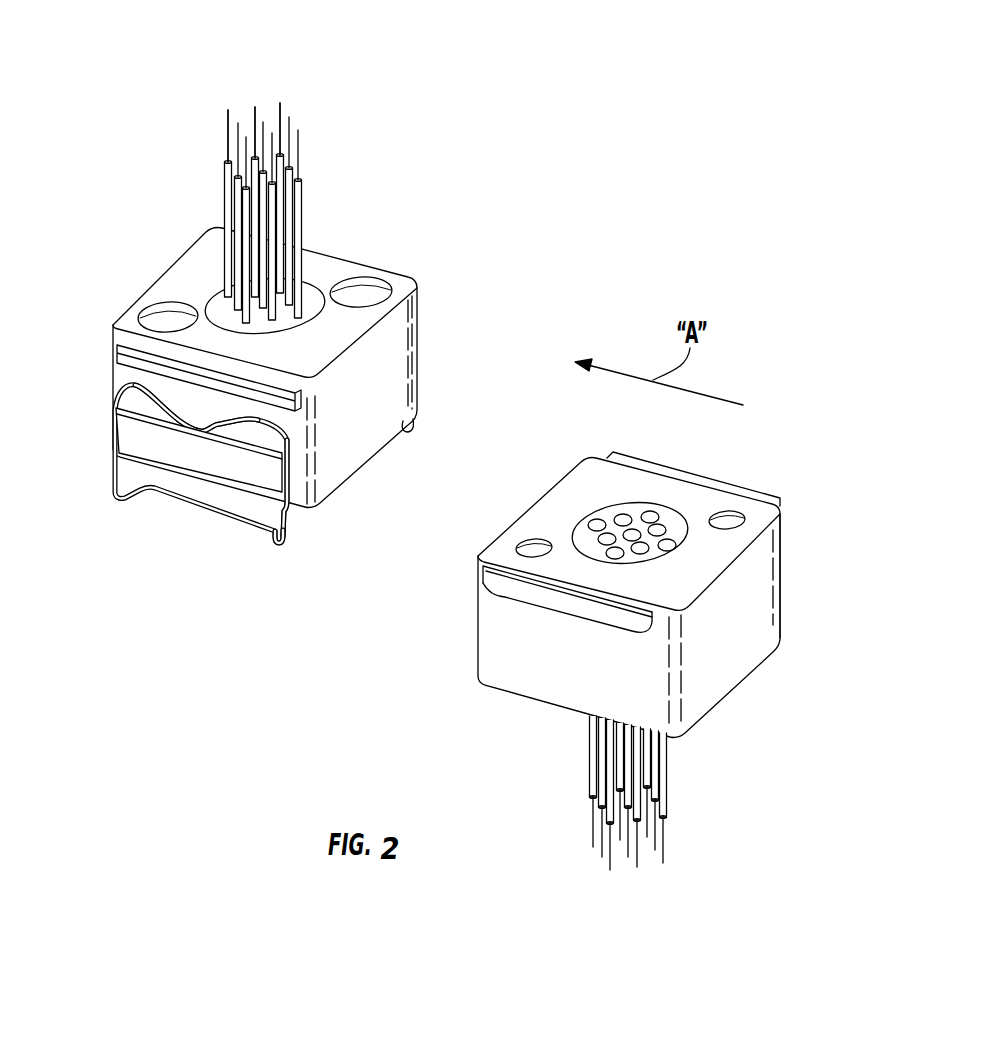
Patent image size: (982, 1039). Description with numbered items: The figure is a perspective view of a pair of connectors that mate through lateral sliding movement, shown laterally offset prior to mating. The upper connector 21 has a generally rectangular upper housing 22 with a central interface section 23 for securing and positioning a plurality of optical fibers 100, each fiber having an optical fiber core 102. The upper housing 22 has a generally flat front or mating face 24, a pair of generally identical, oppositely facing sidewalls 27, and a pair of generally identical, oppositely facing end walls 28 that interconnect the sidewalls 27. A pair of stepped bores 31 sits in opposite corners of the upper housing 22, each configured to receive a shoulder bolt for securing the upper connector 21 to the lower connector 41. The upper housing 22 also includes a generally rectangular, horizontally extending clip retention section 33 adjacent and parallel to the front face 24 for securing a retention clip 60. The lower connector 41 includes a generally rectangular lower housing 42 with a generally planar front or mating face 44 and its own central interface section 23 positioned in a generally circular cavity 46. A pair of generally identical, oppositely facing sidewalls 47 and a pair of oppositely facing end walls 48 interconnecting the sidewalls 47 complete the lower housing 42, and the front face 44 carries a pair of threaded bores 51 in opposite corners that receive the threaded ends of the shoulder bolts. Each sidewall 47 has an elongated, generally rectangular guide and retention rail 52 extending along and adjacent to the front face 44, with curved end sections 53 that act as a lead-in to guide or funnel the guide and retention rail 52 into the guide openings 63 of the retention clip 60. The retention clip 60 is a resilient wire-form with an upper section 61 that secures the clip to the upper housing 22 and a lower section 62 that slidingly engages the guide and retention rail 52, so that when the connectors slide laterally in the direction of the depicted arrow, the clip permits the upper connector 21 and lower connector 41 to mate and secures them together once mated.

The upper connector 21 is at (140, 186).
The upper housing 22 is at (322, 250).
The central interface section 23 is at (283, 323).
The front face 24 is at (370, 460).
The sidewalls 27 is at (413, 281).
The end walls 28 is at (146, 297).
The stepped bores 31 is at (357, 288).
The clip retention section 33 is at (127, 432).
The lower connector 41 is at (852, 494).
The lower housing 42 is at (777, 533).
The front face 44 is at (579, 485).
The circular cavity 46 is at (663, 553).
The sidewalls 47 is at (780, 502).
The end walls 48 is at (526, 508).
The threaded bores 51 is at (733, 520).
The guide and retention rail 52 is at (632, 457).
The curved end sections 53 is at (497, 582).
The retention clip 60 is at (113, 405).
The upper section 61 is at (116, 386).
The lower section 62 is at (295, 535).
The guide openings 63 is at (292, 521).
The optical fibers 100 is at (250, 148).
The optical fiber core 102 is at (302, 140).